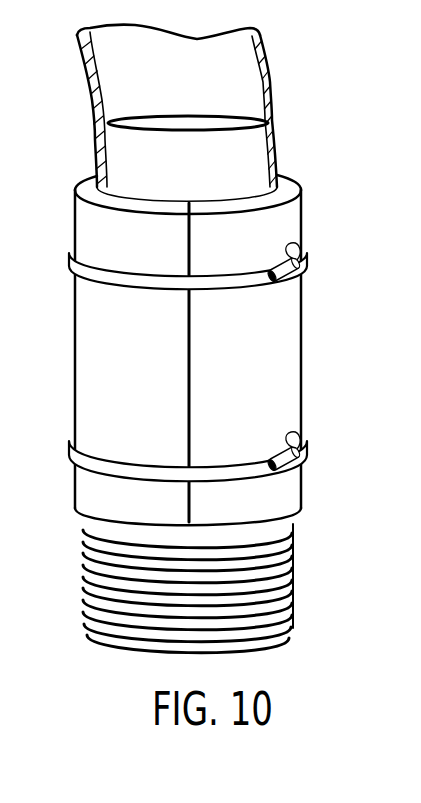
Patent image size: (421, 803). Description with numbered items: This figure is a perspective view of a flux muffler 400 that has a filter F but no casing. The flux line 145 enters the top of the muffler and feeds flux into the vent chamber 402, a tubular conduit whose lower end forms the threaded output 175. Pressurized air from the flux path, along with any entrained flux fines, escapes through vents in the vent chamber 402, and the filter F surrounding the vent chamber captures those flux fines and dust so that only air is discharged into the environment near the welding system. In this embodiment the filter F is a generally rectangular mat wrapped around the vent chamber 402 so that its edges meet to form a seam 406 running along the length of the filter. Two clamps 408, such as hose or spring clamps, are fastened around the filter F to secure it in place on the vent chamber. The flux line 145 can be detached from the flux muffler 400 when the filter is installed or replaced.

The flux muffler 400 is at (232, 339).
The flux line 145 is at (266, 62).
The vent chamber 402 is at (221, 116).
The clamps 408 is at (298, 250).
The filter F is at (302, 346).
The seam 406 is at (186, 384).
The output 175 is at (295, 560).